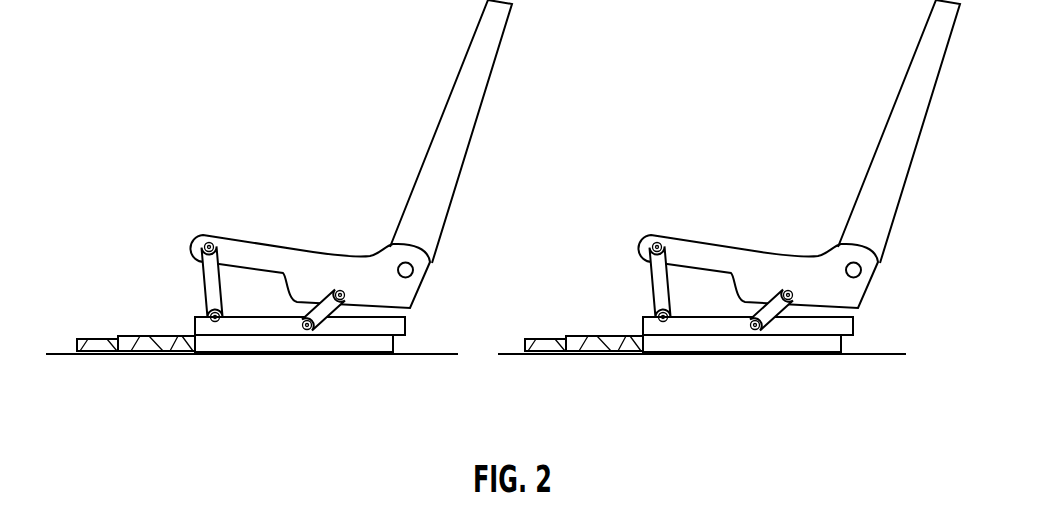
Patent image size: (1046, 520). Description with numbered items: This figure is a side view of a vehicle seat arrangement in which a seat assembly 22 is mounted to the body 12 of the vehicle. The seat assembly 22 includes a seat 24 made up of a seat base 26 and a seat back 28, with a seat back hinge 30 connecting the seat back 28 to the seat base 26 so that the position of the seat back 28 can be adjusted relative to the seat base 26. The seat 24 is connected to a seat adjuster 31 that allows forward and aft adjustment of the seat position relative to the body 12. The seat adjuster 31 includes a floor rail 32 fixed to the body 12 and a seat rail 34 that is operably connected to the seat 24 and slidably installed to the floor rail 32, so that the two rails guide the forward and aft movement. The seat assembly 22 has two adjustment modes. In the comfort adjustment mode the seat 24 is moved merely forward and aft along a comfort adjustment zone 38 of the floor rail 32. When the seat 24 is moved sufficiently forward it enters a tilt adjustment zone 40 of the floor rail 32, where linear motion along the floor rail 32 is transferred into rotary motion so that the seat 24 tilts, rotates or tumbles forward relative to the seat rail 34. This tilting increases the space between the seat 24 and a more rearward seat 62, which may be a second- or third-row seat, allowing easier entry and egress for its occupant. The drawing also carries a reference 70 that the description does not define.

The body 12 is at (63, 352).
The seat assembly 22 is at (392, 150).
The seat 24 is at (462, 68).
The seat base 26 is at (242, 249).
The seat back 28 is at (490, 35).
The seat back hinge 30 is at (414, 266).
The seat adjuster 31 is at (321, 288).
The floor rail 32 is at (370, 345).
The seat rail 34 is at (407, 327).
The comfort adjustment zone 38 is at (158, 352).
The tilt adjustment zone 40 is at (97, 338).
The more rearward seat 62 is at (900, 90).
The seat mounting system 70 is at (302, 410).